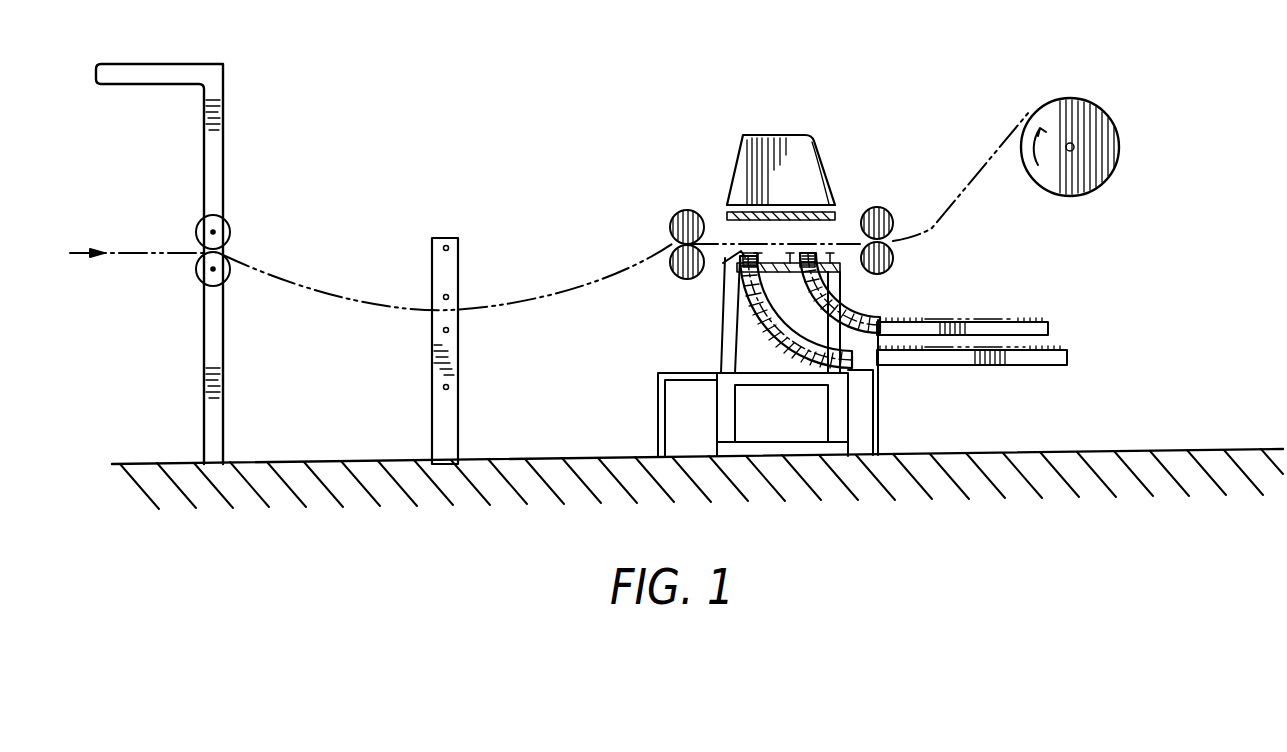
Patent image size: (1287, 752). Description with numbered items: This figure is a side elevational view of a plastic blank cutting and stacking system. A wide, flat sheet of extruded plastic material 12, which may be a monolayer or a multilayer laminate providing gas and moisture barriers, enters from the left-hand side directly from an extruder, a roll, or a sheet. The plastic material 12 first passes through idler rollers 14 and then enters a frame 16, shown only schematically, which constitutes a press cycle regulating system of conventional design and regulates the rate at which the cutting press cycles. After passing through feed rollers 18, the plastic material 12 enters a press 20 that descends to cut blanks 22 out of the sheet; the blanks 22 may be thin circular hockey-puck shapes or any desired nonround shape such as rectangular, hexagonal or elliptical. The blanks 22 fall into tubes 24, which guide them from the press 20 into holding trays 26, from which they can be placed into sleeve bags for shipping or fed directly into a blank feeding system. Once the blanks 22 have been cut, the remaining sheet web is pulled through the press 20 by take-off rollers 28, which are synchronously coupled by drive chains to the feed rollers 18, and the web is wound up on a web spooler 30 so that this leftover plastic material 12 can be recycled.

The plastic material 12 is at (86, 253).
The idler rollers 14 is at (231, 235).
The frame 16 is at (430, 262).
The feed rollers 18 is at (670, 222).
The press 20 is at (744, 166).
The blanks 22 is at (748, 252).
The tubes 24 is at (768, 320).
The holding trays 26 is at (1050, 334).
The take-off rollers 28 is at (893, 218).
The web spooler 30 is at (1080, 110).